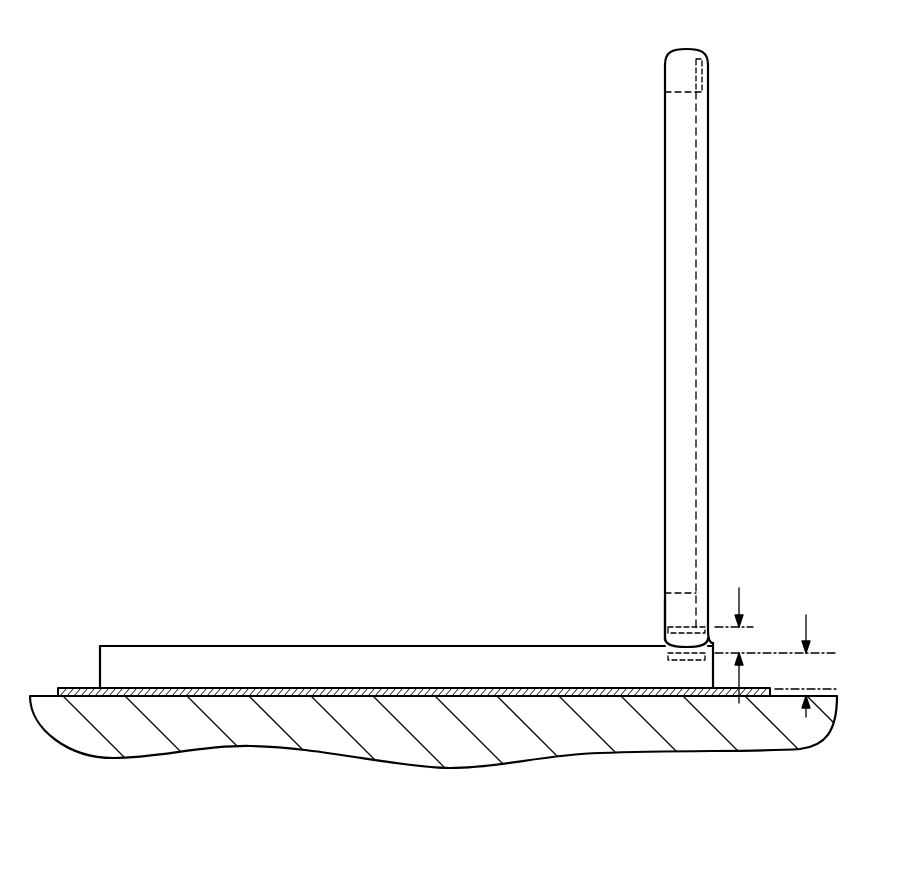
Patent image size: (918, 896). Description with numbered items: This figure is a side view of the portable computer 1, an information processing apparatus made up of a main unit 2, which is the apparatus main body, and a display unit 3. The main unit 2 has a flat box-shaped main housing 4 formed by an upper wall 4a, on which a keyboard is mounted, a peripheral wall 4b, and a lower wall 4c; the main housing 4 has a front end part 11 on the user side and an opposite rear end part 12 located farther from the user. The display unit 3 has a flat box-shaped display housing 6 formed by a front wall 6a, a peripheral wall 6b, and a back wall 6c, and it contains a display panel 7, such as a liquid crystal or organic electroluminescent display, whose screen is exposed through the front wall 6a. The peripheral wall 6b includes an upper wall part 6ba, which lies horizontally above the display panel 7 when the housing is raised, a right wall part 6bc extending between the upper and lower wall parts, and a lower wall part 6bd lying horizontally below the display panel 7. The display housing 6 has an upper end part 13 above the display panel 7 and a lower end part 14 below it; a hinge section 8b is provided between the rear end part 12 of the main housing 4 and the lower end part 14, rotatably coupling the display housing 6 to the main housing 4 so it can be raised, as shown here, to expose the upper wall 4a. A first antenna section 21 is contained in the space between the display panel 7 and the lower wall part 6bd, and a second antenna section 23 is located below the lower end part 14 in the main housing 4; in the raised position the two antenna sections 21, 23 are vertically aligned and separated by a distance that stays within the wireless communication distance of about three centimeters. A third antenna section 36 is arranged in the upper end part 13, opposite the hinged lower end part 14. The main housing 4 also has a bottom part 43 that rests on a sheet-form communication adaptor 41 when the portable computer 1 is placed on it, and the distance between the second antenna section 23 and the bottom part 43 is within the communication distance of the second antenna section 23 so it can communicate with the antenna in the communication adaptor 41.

The portable computer 1 is at (381, 313).
The main unit 2 is at (349, 642).
The display unit 3 is at (665, 287).
The main housing 4 is at (415, 651).
The upper wall 4a is at (473, 646).
The peripheral wall 4b is at (546, 656).
The lower wall 4c is at (478, 697).
The display housing 6 is at (666, 373).
The front wall 6a is at (666, 77).
The peripheral wall 6b is at (681, 147).
The upper wall part 6ba is at (686, 52).
The right wall part 6bc is at (685, 400).
The lower wall part 6bd is at (666, 648).
The back wall 6c is at (709, 226).
The display panel 7 is at (697, 297).
The hinge section 8b is at (712, 634).
The front end part 11 is at (146, 660).
The rear end part 12 is at (703, 678).
The upper end part 13 is at (679, 63).
The lower end part 14 is at (672, 608).
The first antenna section 21 is at (680, 628).
The second antenna section 23 is at (682, 660).
The third antenna section 36 is at (701, 75).
The communication adaptor 41 is at (348, 690).
The bottom part 43 is at (402, 690).